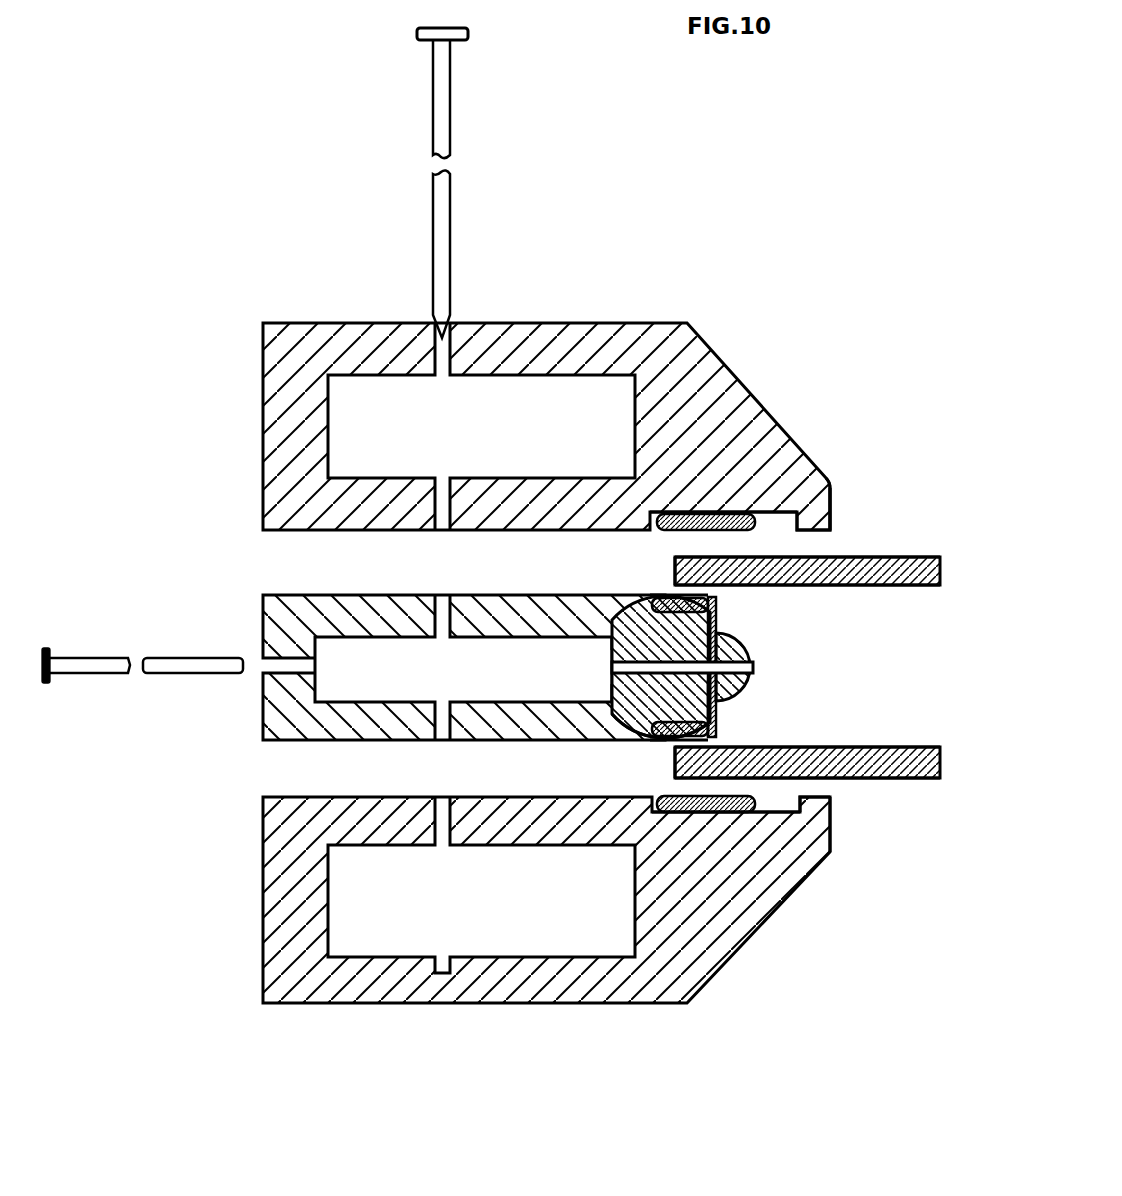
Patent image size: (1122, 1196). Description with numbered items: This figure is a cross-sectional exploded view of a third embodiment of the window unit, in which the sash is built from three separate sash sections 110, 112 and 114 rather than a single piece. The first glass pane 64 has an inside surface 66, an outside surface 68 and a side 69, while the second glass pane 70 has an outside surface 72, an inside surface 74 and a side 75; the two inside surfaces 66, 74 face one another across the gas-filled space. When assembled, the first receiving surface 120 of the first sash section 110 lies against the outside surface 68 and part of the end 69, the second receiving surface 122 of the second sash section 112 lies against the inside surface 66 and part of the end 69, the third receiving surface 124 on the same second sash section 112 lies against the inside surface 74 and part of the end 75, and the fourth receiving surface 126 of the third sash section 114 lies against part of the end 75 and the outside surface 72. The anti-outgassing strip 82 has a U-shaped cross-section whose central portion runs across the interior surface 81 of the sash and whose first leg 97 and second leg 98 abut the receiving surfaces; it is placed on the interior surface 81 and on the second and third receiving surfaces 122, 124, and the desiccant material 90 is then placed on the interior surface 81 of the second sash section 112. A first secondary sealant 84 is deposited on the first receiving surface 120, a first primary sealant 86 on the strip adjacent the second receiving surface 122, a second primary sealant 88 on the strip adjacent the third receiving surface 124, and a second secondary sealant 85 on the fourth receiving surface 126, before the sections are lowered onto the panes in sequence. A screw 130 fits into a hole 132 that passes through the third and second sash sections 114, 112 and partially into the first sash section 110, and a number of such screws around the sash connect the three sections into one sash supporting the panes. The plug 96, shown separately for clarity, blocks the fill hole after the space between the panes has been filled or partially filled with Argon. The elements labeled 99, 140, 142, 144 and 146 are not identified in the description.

The first glass pane 64 is at (893, 760).
The inside surface 66 is at (831, 748).
The outside surface 68 is at (903, 779).
The side 69 is at (676, 774).
The second glass pane 70 is at (880, 563).
The outside surface 72 is at (853, 556).
The inside surface 74 is at (862, 586).
The side 75 is at (678, 562).
The interior surface 81 is at (728, 701).
The anti-outgassing strip 82 is at (723, 640).
The first secondary sealant 84 is at (752, 804).
The second secondary sealant 85 is at (695, 514).
The first primary sealant 86 is at (662, 690).
The second primary sealant 88 is at (661, 667).
The desiccant material 90 is at (750, 684).
The plug 96 is at (100, 666).
The first leg 97 is at (672, 739).
The second leg 98 is at (673, 599).
The dome 99 is at (742, 656).
The first sash section 110 is at (577, 1003).
The second sash section 112 is at (318, 728).
The third sash section 114 is at (308, 517).
The first receiving surface 120 is at (817, 797).
The second receiving surface 122 is at (612, 692).
The third receiving surface 124 is at (603, 649).
The fourth receiving surface 126 is at (800, 512).
The screw 130 is at (447, 107).
The hole 132 is at (452, 322).
The step 140 is at (830, 808).
The lower seal ring 142 is at (714, 729).
The upper seal ring 144 is at (714, 607).
The corner 146 is at (826, 497).